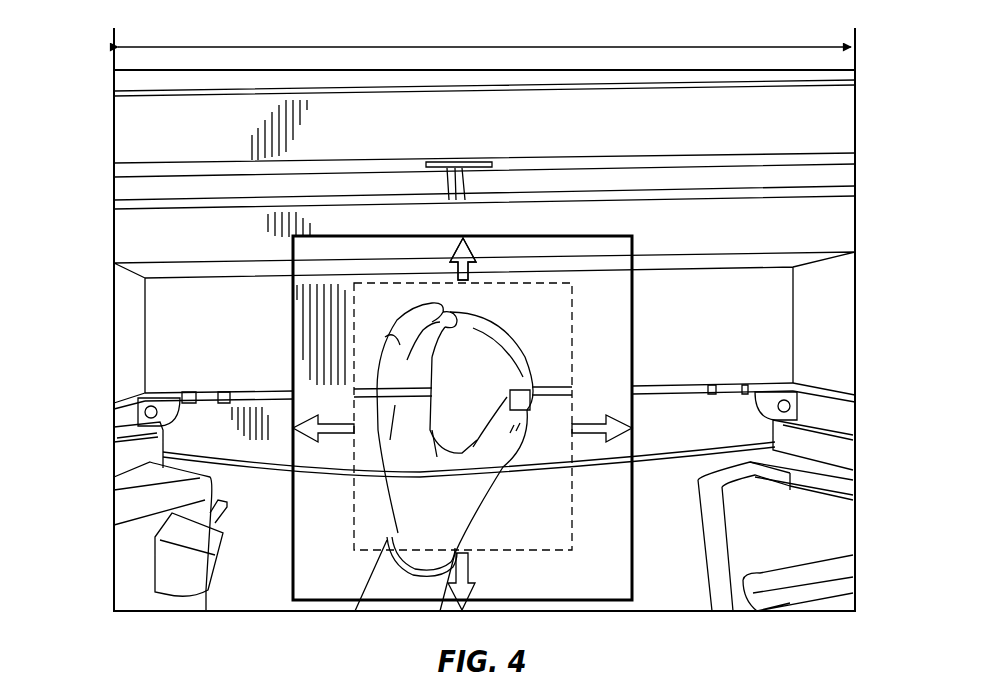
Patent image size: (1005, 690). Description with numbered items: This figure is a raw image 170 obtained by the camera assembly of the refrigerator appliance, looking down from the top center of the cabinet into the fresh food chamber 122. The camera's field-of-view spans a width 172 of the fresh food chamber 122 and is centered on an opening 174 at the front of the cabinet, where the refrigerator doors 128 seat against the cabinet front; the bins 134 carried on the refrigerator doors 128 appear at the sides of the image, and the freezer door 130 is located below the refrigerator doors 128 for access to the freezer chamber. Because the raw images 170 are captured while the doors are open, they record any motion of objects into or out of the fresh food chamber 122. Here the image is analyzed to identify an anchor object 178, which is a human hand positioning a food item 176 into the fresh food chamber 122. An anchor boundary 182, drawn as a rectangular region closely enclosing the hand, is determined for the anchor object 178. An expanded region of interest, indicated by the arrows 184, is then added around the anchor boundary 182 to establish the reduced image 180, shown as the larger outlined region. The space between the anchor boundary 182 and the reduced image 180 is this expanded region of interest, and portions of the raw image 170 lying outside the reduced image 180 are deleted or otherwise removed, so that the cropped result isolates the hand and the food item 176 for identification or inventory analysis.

The fresh food chamber 122 is at (160, 130).
The raw image 170 is at (860, 180).
The width of fresh food chamber 172 is at (217, 46).
The opening 174 is at (708, 396).
The food item 176 is at (481, 382).
The anchor object 178 is at (410, 495).
The reduced image 180 is at (637, 326).
The anchor boundary 182 is at (352, 332).
The expanded region of interest 184 is at (468, 248).
The freezer door 130 is at (726, 418).
The refrigerator doors 128 is at (130, 507).
The bins 134 is at (848, 578).